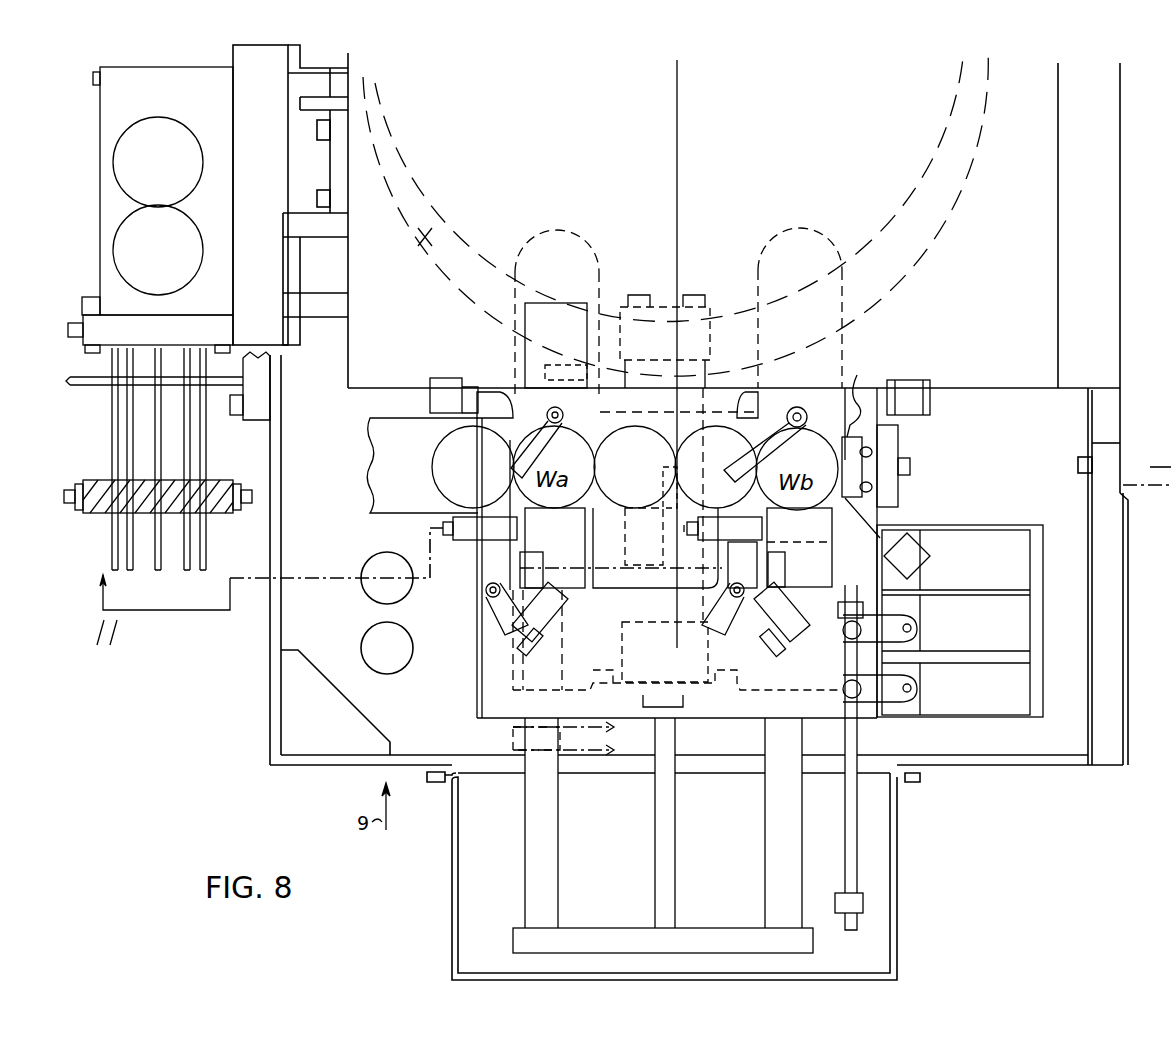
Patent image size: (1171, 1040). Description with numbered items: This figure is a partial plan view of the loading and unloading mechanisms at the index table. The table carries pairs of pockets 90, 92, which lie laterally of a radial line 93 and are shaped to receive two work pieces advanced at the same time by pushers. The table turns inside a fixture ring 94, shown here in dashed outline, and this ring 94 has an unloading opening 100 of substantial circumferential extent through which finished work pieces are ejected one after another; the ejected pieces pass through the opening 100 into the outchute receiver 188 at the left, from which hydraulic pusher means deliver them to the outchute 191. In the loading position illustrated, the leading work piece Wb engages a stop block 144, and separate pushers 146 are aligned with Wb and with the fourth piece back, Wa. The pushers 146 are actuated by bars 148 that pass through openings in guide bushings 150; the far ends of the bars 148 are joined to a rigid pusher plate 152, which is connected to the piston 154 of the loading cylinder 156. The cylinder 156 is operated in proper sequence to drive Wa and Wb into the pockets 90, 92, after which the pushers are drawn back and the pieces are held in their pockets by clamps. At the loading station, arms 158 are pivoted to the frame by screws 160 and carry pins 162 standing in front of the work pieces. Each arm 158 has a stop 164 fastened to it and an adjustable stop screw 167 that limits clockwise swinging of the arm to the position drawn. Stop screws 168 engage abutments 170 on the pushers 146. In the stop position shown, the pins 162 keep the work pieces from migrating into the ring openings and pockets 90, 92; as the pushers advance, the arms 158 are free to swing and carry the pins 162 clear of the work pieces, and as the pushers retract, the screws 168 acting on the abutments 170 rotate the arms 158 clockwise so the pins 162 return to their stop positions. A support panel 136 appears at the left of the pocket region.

The outchute receiver 188 is at (100, 212).
The outchute 191 is at (110, 538).
The unloading opening 100 is at (395, 98).
The fixture ring 94 is at (424, 240).
The pocket 90 is at (570, 232).
The radial line 93 is at (677, 242).
The pocket 92 is at (760, 262).
The stop block 144 is at (886, 449).
The support panel 136 is at (381, 400).
The pin 162 is at (560, 416).
The pusher 146 is at (573, 548).
The adjustable stop screw 167 is at (688, 528).
The stop 164 is at (718, 532).
The arm 158 is at (722, 570).
The screw 160 is at (487, 597).
The loading cylinder 156 is at (622, 605).
The guide bushing 150 is at (565, 678).
The abutment 170 is at (835, 598).
The stop screw 168 is at (772, 650).
The bar 148 is at (560, 866).
The piston 154 is at (678, 852).
The rigid pusher plate 152 is at (697, 938).